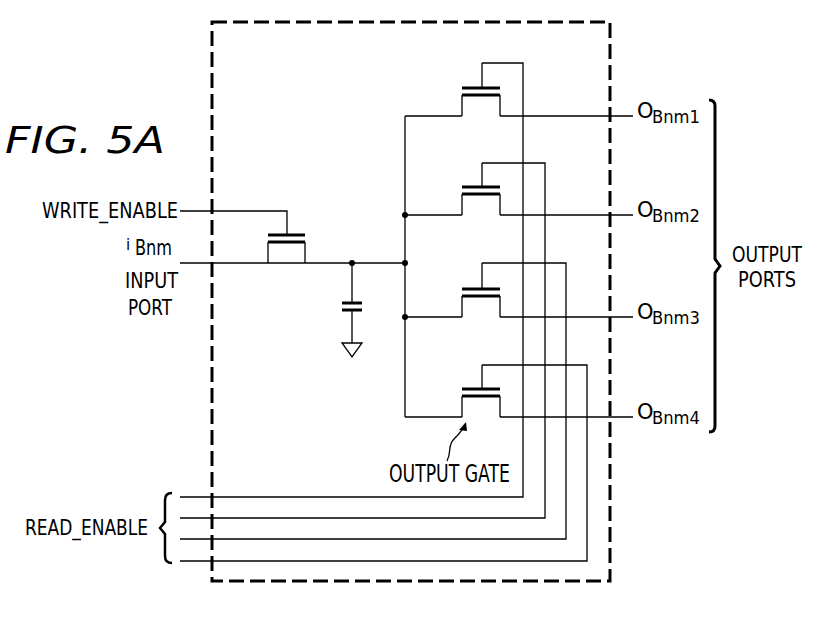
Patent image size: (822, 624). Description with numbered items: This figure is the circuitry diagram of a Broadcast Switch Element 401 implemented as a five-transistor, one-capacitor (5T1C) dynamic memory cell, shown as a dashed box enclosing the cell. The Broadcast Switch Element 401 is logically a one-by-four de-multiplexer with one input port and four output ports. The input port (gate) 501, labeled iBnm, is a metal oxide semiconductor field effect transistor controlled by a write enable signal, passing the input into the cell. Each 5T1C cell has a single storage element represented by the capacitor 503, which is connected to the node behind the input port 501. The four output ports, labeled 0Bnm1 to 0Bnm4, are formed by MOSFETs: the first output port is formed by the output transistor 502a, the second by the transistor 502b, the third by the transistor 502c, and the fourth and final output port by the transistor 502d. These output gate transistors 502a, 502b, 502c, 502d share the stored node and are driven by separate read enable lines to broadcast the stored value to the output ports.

The Broadcast Switch Element 401 is at (212, 380).
The input port (gate) 501 is at (294, 235).
The output transistor 502a is at (471, 87).
The transistor 502b is at (471, 186).
The transistor 502c is at (471, 288).
The transistor 502d is at (471, 388).
The capacitor 503 is at (340, 305).